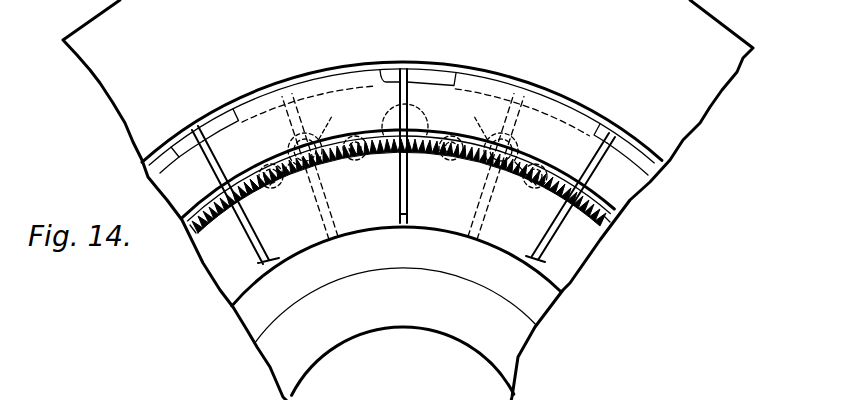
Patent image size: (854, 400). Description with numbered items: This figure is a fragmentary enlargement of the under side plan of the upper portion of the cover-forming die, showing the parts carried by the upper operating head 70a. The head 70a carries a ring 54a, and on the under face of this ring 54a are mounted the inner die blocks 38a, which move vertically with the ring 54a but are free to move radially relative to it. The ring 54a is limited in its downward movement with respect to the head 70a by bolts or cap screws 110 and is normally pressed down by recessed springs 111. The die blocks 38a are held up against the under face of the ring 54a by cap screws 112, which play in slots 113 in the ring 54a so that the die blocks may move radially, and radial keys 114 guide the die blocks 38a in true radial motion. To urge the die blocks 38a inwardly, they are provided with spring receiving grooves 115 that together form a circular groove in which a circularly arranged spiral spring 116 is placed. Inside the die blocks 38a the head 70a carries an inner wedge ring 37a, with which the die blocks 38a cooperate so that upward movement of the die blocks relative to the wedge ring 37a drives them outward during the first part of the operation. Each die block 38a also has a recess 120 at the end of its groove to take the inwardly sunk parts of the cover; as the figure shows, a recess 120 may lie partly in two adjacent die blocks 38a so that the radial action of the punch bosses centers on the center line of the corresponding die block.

The inner die blocks 38a is at (173, 185).
The ring 54a is at (213, 110).
The recess 120 is at (213, 133).
The radial keys 114 is at (297, 90).
The cap screws 112 is at (262, 167).
The recessed springs 111 is at (403, 143).
The bolts or cap screws 110 is at (411, 120).
The slots 113 is at (272, 188).
The spiral spring 116 is at (195, 228).
The spring receiving grooves 115 is at (612, 218).
The inner wedge ring 37a is at (396, 285).
The upper operating head 70a is at (408, 314).